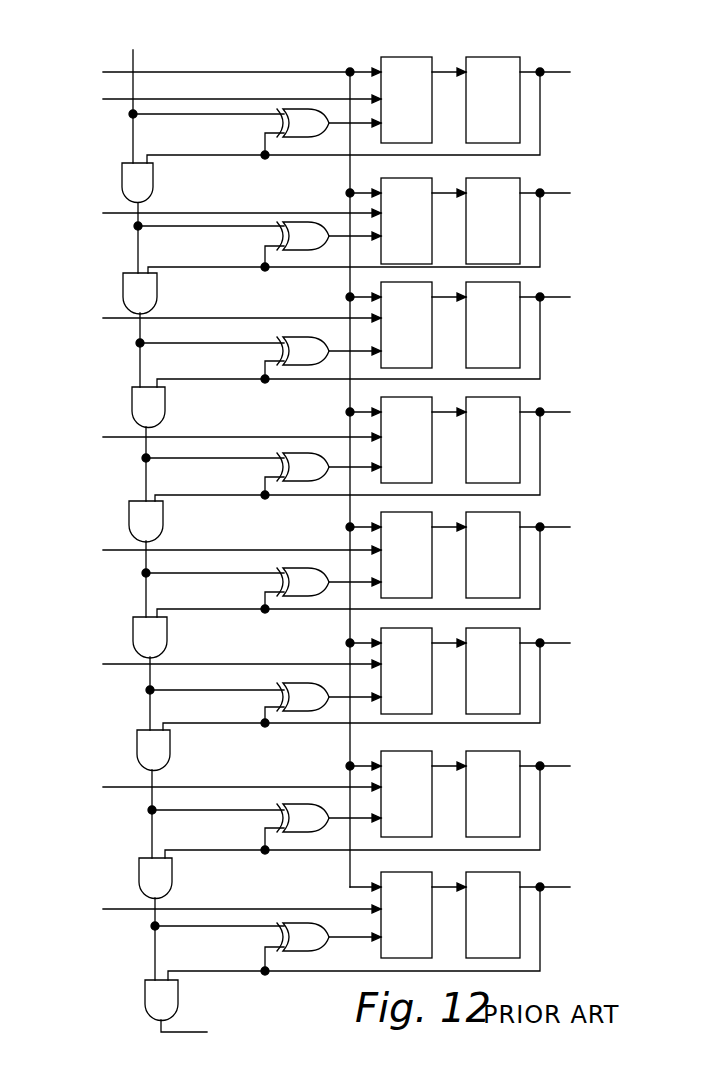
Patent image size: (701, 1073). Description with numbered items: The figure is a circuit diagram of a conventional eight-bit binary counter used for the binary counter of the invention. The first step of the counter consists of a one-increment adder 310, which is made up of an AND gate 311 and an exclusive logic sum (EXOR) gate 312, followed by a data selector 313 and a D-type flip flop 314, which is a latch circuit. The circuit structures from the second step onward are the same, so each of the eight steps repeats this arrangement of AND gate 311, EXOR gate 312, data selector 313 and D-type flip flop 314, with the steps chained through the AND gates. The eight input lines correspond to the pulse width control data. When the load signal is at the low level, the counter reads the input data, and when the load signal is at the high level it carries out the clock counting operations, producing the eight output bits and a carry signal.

The one-increment adder 310 is at (212, 200).
The AND gate 311 is at (121, 176).
The exclusive logic sum (EXOR) gate 312 is at (303, 108).
The data selector 313 is at (425, 56).
The D-type flip flop 314 is at (506, 30).